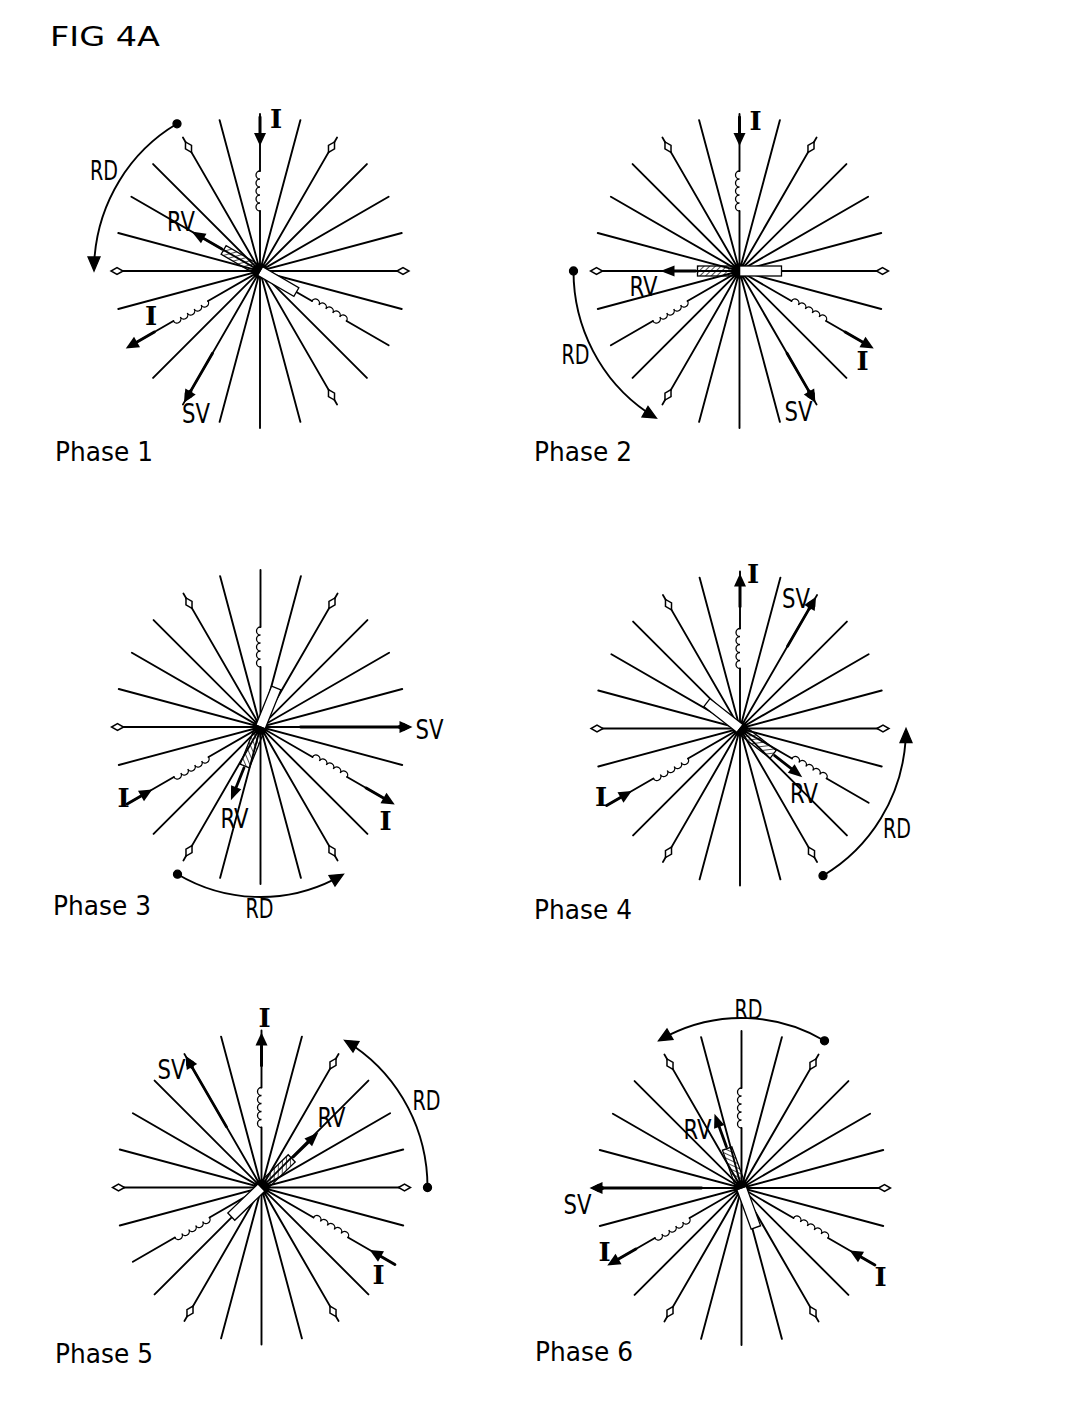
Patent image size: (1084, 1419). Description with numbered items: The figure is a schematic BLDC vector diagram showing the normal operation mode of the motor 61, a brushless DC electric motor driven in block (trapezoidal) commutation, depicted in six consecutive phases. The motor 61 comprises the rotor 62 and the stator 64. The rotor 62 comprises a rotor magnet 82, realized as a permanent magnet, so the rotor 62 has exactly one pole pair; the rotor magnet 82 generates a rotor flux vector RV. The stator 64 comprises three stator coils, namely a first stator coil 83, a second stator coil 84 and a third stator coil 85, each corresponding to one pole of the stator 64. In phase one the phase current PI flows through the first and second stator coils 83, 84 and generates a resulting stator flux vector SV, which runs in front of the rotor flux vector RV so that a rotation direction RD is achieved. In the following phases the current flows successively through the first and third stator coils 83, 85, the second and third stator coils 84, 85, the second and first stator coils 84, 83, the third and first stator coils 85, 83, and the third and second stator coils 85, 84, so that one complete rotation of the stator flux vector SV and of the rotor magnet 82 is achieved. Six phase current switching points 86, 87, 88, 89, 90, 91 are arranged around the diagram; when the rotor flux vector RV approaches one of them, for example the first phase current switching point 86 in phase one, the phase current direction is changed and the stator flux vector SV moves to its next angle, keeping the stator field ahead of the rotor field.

The motor 61 is at (501, 694).
The rotor 62 is at (565, 753).
The stator 64 is at (465, 557).
The rotor magnet 82 is at (539, 766).
The first stator coil 83 is at (484, 614).
The second stator coil 84 is at (406, 800).
The third stator coil 85 is at (607, 781).
The first phase current switching point 86 is at (331, 728).
The phase current switching point 87 is at (421, 878).
The phase current switching point 88 is at (597, 868).
The phase current switching point 89 is at (659, 725).
The phase current switching point 90 is at (597, 592).
The phase current switching point 91 is at (431, 576).